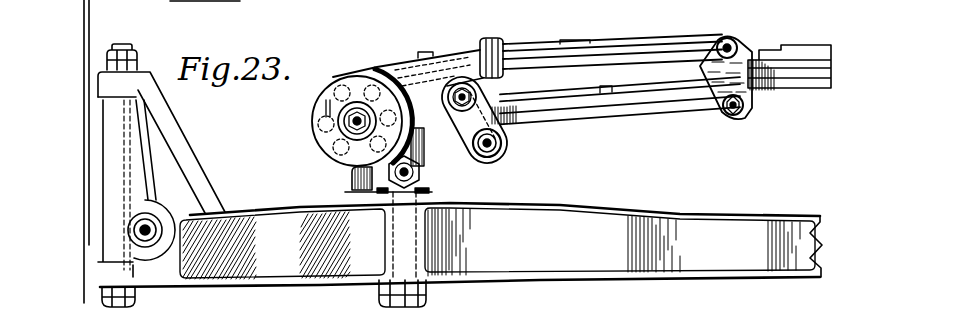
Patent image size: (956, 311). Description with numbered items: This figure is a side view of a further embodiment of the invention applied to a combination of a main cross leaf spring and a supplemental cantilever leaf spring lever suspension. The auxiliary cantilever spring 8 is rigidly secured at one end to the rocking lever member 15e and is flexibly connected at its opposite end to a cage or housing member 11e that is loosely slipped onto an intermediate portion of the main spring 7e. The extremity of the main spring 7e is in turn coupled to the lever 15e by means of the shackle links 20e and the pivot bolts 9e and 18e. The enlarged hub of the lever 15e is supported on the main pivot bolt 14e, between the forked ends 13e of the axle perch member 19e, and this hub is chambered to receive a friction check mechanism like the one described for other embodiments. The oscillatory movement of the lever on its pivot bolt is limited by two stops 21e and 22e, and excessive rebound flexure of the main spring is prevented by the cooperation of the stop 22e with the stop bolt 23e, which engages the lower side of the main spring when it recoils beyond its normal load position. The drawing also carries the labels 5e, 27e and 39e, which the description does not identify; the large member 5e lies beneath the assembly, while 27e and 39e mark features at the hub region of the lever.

The frame bar 5e is at (461, 245).
The lower rod 7e is at (648, 103).
The upper rod 8 is at (618, 40).
The lever pivot 9e is at (483, 97).
The connecting bracket 11e is at (744, 48).
The disc 13e is at (322, 139).
The hub nut 14e is at (343, 123).
The housing 15e is at (411, 66).
The link pivot 18e is at (502, 152).
The clamping bolt 19e is at (428, 192).
The link 20e is at (522, 122).
The clamp nut 21e is at (416, 142).
The clamp block 22e is at (357, 184).
The bracket pin 23e is at (734, 114).
The disc holes 27e is at (366, 76).
The disc ring 39e is at (330, 106).